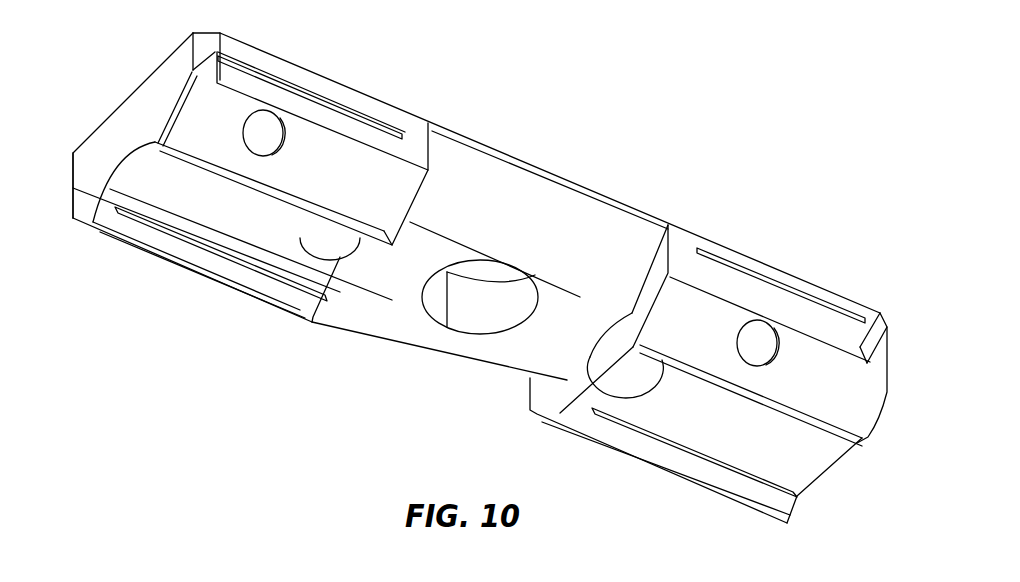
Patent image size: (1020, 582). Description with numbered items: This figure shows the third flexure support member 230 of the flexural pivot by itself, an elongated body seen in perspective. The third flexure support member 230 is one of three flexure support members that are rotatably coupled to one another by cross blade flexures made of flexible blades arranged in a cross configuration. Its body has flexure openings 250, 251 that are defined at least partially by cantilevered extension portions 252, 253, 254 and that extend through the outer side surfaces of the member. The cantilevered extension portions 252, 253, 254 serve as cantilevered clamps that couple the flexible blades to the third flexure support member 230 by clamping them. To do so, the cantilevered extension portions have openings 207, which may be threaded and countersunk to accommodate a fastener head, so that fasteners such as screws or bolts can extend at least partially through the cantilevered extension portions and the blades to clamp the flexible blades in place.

The third flexure support member 230 is at (480, 278).
The opening 207 is at (258, 130).
The flexure opening 250 is at (195, 246).
The flexure opening 251 is at (318, 88).
The cantilevered extension portion 252 is at (117, 225).
The cantilevered extension portion 253 is at (118, 128).
The cantilevered extension portion 254 is at (203, 116).